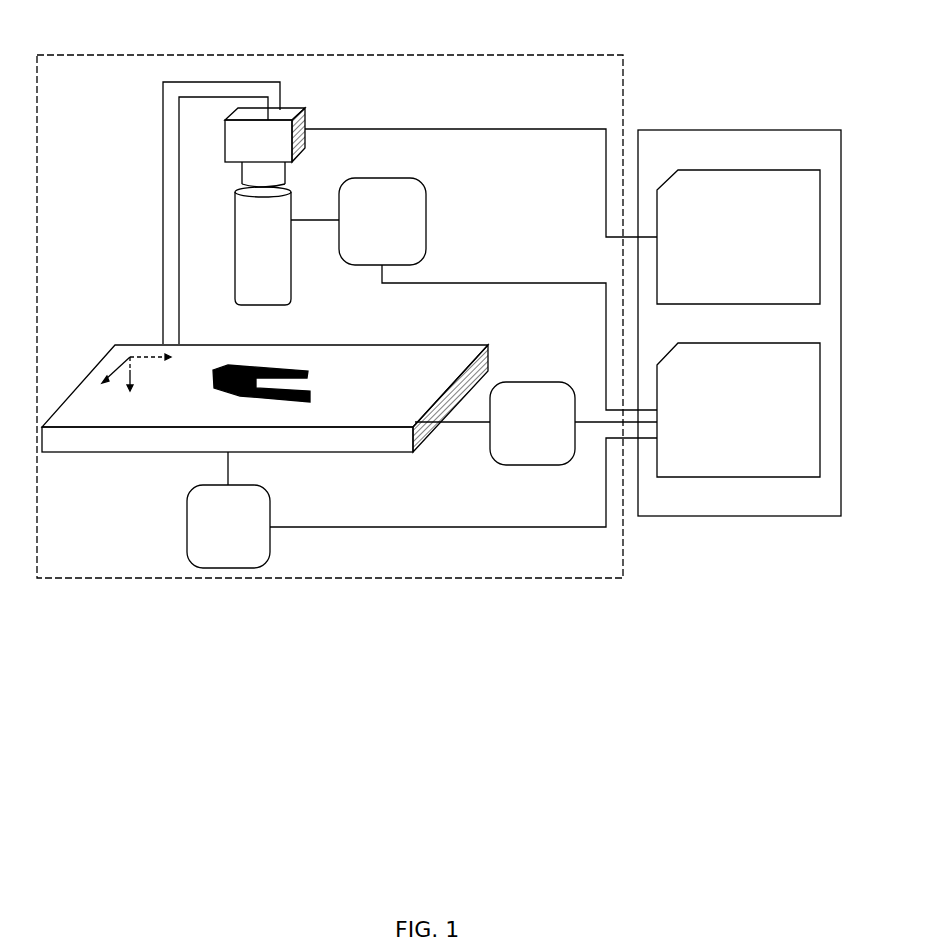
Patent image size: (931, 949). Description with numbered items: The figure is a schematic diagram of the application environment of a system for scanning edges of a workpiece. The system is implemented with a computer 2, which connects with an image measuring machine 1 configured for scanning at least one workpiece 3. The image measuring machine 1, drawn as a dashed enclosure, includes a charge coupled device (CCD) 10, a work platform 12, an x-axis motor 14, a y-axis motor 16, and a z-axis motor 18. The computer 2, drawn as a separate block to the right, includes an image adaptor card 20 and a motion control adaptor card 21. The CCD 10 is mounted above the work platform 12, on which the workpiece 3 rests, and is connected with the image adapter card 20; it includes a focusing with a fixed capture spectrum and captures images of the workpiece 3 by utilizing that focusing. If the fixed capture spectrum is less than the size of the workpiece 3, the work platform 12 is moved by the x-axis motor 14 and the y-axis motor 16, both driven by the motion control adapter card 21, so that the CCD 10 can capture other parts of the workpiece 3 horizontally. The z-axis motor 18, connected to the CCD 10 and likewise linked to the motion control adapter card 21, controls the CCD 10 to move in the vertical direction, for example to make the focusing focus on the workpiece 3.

The image measuring machine 1 is at (285, 55).
The computer 2 is at (738, 130).
The workpiece 3 is at (229, 362).
The charge coupled device (CCD) 10 is at (293, 107).
The work platform 12 is at (367, 345).
The x-axis motor 14 is at (270, 500).
The y-axis motor 16 is at (533, 382).
The z-axis motor 18 is at (426, 195).
The image adaptor card 20 is at (820, 237).
The motion control adaptor card 21 is at (820, 410).